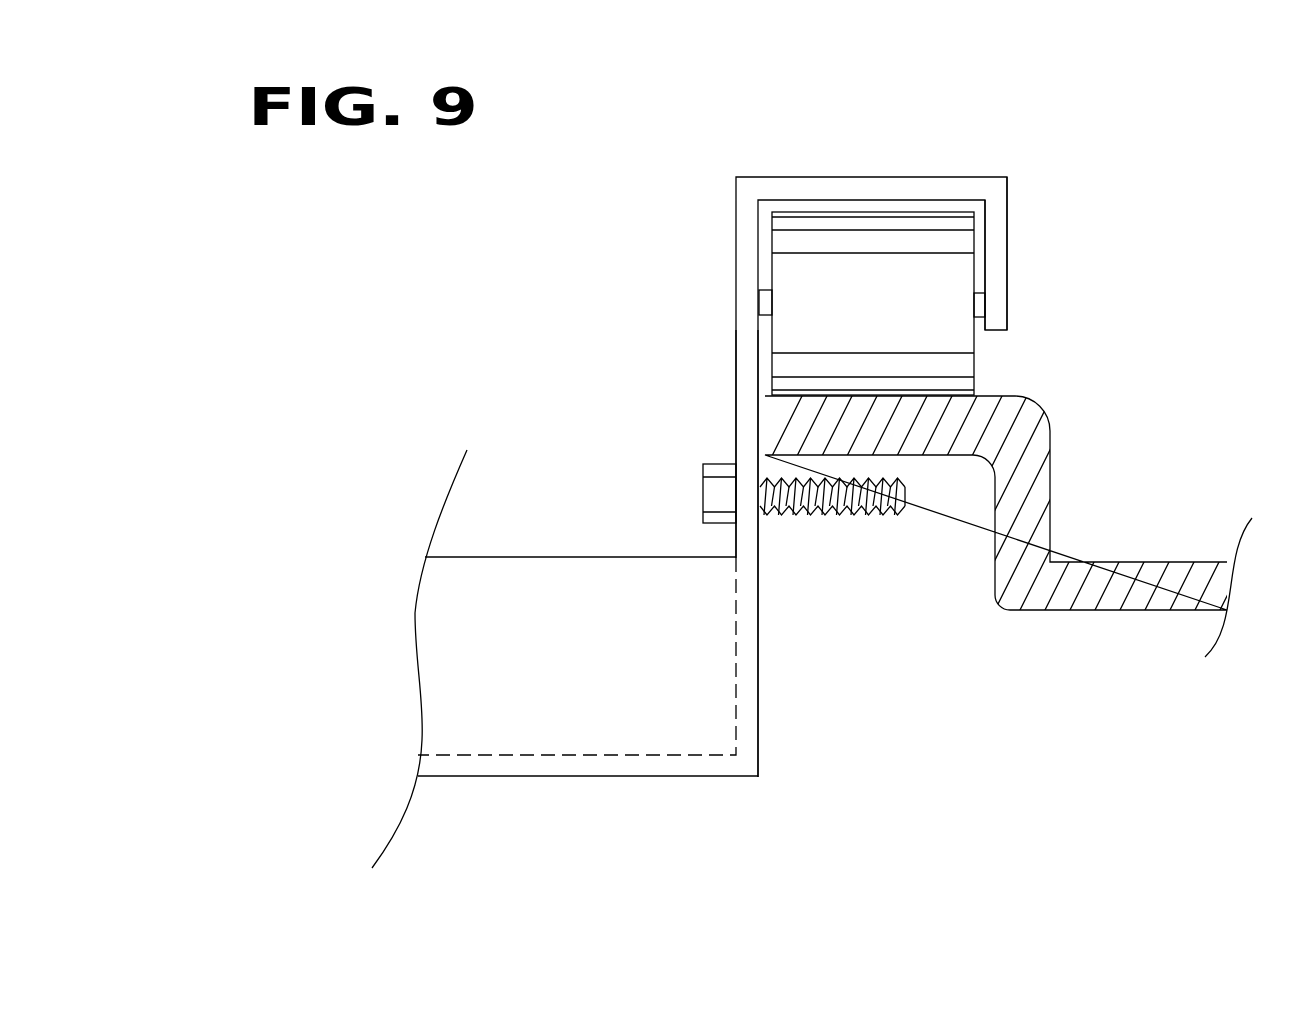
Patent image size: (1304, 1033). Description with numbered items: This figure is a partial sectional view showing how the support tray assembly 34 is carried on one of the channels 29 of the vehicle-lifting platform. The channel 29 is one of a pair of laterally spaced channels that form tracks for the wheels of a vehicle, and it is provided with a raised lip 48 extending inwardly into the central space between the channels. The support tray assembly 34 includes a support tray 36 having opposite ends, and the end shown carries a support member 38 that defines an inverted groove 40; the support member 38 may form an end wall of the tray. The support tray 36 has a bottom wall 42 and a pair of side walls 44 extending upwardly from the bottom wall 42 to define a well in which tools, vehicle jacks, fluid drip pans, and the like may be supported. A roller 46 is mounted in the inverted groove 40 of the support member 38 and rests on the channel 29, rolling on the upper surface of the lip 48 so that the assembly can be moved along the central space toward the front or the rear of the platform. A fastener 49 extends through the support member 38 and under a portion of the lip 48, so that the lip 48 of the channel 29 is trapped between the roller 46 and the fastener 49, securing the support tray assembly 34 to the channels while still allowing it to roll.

The channel 29 is at (1042, 480).
The support tray assembly 34 is at (603, 467).
The support tray 36 is at (542, 632).
The support member 38 is at (817, 182).
The inverted groove 40 is at (925, 200).
The bottom wall 42 is at (646, 770).
The side wall 44 is at (493, 653).
The roller 46 is at (927, 278).
The raised lip 48 is at (930, 438).
The fastener 49 is at (700, 490).